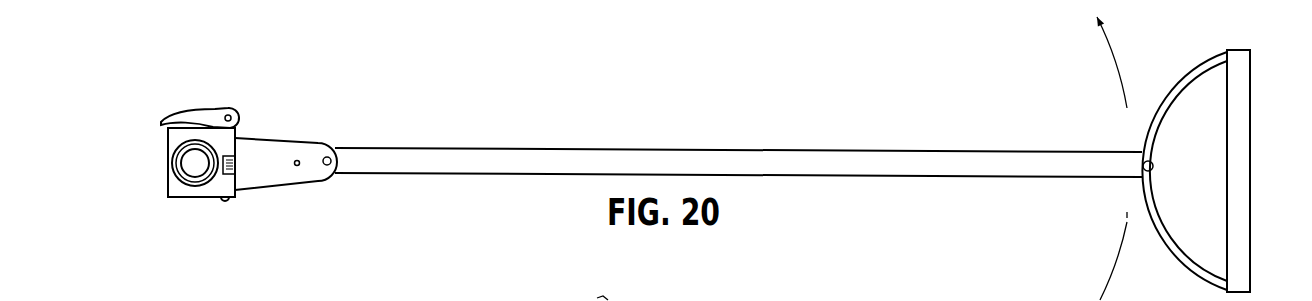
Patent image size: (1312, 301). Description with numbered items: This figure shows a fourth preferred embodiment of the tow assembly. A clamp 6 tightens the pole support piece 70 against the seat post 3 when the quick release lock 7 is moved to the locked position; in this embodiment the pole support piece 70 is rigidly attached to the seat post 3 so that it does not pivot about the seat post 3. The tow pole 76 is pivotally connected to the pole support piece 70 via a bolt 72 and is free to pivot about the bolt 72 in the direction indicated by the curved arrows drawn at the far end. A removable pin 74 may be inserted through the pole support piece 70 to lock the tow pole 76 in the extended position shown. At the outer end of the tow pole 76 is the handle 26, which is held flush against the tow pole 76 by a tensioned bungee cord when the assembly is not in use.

The seat post 3 is at (204, 145).
The clamp 6 is at (214, 198).
The quick release lock 7 is at (173, 110).
The pole support piece 70 is at (263, 138).
The bolt 72 is at (321, 157).
The removable pin 74 is at (299, 167).
The tow pole 76 is at (815, 150).
The handle 26 is at (1252, 133).